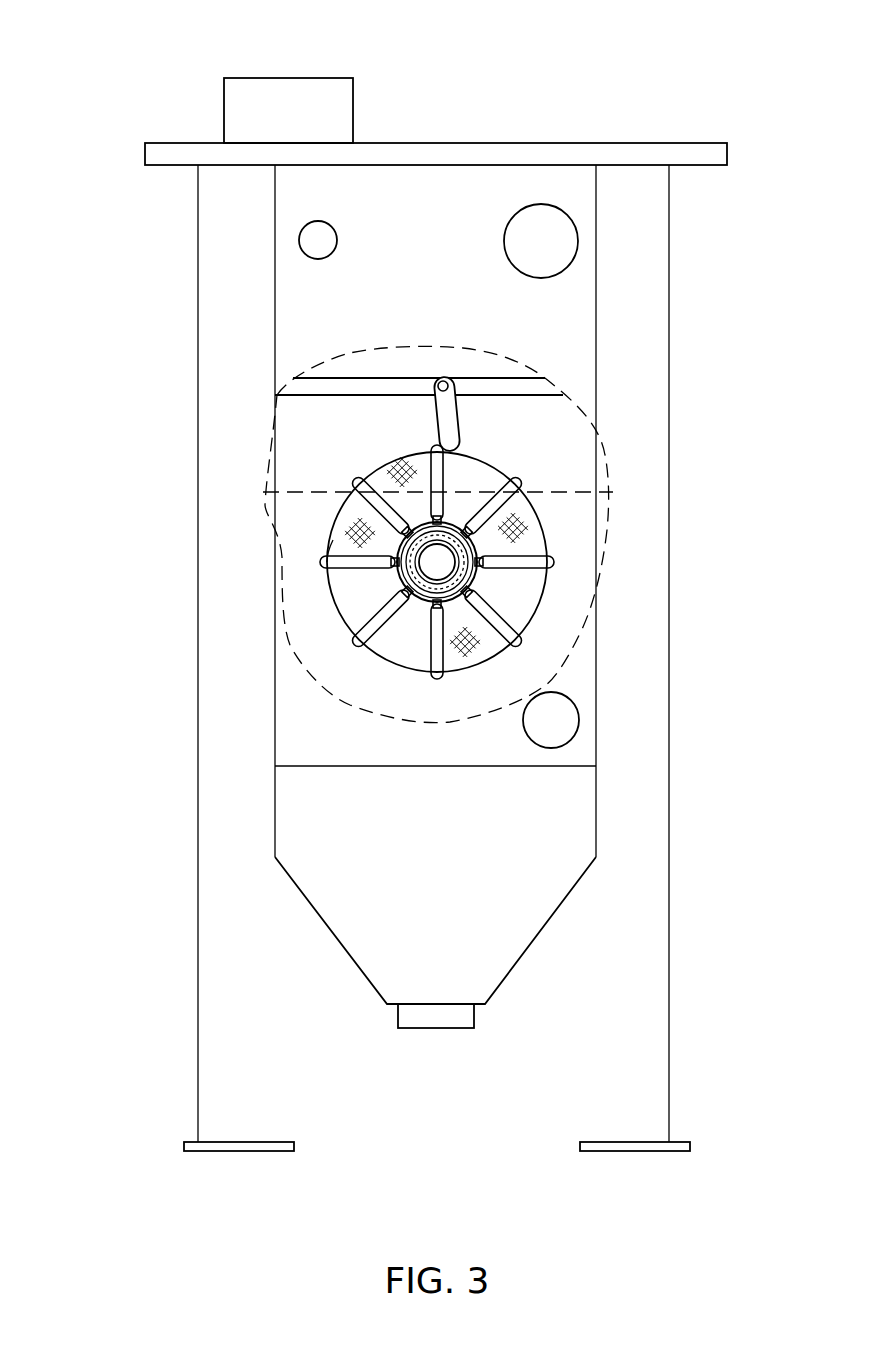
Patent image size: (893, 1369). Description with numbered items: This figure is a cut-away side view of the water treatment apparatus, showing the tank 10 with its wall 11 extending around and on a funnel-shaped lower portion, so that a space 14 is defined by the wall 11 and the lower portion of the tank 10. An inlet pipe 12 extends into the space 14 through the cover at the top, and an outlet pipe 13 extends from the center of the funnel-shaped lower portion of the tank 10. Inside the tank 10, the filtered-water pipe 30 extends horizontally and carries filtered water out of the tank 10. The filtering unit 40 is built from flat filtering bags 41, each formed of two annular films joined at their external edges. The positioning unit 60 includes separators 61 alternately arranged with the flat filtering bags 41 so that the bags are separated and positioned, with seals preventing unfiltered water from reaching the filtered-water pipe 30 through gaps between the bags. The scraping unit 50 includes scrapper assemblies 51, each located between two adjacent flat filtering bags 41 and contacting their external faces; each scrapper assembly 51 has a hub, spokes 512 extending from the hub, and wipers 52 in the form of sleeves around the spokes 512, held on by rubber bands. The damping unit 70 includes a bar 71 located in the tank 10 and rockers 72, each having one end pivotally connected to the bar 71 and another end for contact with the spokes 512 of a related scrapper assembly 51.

The tank 10 is at (198, 298).
The wall 11 is at (573, 335).
The inlet pipe 12 is at (302, 84).
The outlet pipe 13 is at (438, 1017).
The space 14 is at (330, 680).
The filtered-water pipe 30 is at (438, 568).
The filtering unit 40 is at (532, 569).
The flat filtering bags 41 is at (513, 602).
The scraping unit 50 is at (557, 562).
The wipers 52 is at (564, 567).
The scrapper assemblies 51 is at (193, 524).
The spokes 512 is at (333, 540).
The positioning unit 60 is at (277, 578).
The separators 61 is at (395, 579).
The damping unit 70 is at (517, 398).
The bar 71 is at (358, 383).
The rockers 72 is at (452, 428).